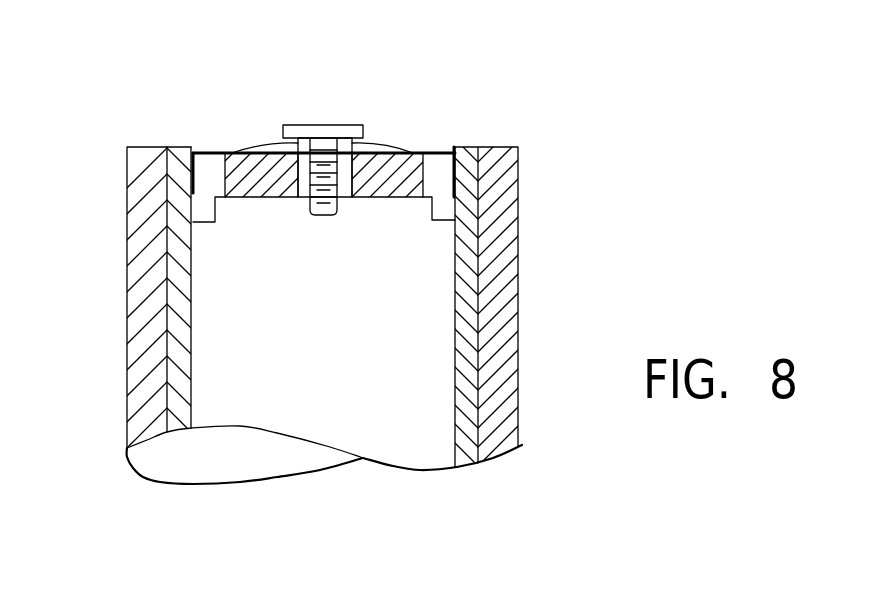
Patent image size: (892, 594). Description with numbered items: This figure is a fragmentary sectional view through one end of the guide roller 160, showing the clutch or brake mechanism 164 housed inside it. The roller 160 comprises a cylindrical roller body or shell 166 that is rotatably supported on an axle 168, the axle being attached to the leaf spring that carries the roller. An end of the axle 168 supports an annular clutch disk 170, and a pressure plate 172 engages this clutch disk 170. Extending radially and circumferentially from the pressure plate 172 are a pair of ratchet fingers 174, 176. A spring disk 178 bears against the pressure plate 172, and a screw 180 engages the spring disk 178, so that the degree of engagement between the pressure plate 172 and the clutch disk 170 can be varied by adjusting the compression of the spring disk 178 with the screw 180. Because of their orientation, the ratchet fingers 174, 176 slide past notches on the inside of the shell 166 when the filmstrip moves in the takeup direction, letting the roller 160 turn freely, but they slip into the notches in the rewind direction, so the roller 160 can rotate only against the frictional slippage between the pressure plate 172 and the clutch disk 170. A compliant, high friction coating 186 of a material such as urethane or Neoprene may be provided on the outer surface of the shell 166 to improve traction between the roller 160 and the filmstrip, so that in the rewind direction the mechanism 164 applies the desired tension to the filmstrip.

The guide roller 160 is at (528, 108).
The clutch or brake mechanism 164 is at (163, 66).
The cylindrical roller body or shell 166 is at (187, 322).
The axle 168 is at (425, 460).
The annular clutch disk 170 is at (408, 150).
The pressure plate 172 is at (205, 152).
The ratchet finger 174 is at (194, 189).
The ratchet finger 176 is at (455, 187).
The spring disk 178 is at (265, 139).
The screw 180 is at (345, 124).
The compliant, high friction coating 186 is at (133, 302).